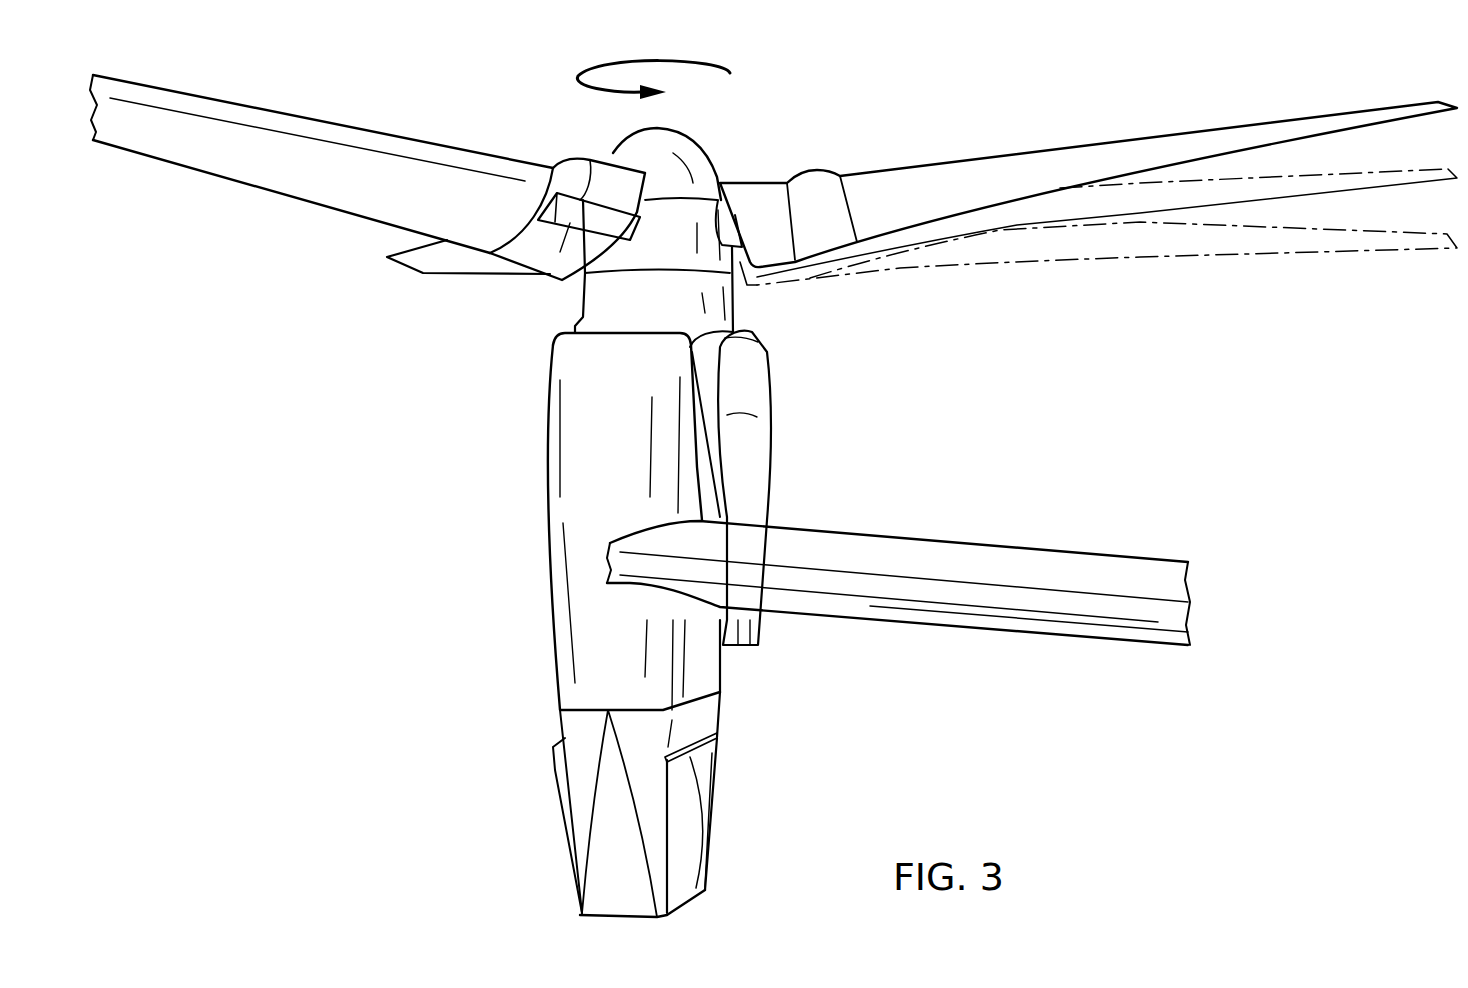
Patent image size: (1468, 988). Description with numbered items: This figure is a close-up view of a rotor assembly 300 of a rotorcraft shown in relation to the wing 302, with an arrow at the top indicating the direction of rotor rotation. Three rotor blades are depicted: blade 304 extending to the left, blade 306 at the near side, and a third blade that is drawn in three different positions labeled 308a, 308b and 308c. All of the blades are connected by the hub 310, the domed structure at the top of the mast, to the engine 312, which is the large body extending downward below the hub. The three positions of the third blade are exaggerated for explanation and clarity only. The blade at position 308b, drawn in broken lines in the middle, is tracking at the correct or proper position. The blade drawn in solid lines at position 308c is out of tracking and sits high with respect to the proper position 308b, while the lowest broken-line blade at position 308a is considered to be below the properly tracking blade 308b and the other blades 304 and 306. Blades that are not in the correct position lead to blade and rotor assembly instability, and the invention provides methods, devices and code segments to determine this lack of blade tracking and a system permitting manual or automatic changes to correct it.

The rotor assembly 300 is at (1060, 84).
The wing 302 is at (948, 546).
The rotor blade 304 is at (212, 160).
The rotor blade 306 is at (458, 265).
The blade position 308a is at (1112, 250).
The blade position 308b is at (1265, 190).
The blade position 308c is at (1146, 149).
The hub 310 is at (618, 150).
The engine 312 is at (552, 508).